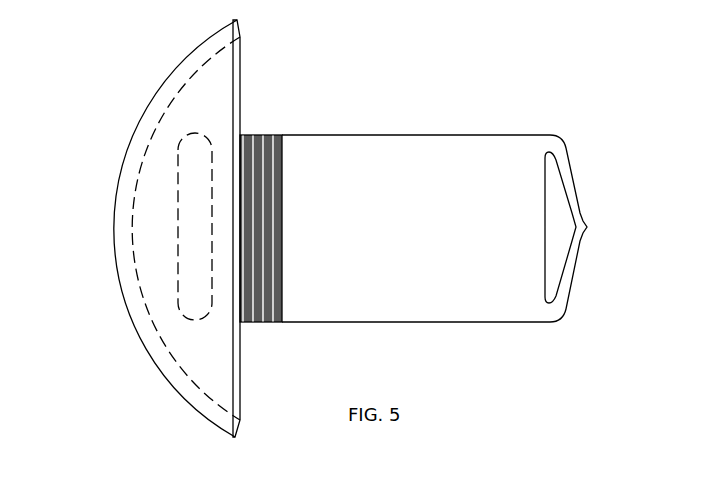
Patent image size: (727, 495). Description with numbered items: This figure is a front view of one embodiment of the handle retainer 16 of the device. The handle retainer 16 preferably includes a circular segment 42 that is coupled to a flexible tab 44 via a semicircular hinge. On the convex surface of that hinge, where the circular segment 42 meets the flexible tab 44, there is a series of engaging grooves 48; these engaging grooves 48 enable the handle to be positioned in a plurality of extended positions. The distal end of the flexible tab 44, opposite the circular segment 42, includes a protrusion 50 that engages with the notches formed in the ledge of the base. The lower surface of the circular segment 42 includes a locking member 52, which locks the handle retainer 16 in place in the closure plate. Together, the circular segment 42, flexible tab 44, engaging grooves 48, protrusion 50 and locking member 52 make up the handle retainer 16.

The handle retainer 16 is at (467, 266).
The circular segment 42 is at (138, 230).
The flexible tab 44 is at (420, 239).
The engaging grooves 48 is at (260, 135).
The protrusion 50 is at (588, 228).
The locking member 52 is at (190, 306).